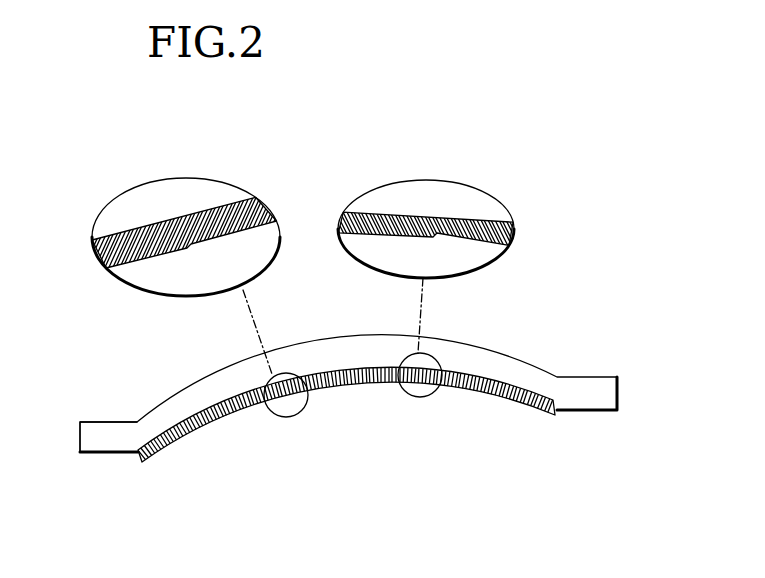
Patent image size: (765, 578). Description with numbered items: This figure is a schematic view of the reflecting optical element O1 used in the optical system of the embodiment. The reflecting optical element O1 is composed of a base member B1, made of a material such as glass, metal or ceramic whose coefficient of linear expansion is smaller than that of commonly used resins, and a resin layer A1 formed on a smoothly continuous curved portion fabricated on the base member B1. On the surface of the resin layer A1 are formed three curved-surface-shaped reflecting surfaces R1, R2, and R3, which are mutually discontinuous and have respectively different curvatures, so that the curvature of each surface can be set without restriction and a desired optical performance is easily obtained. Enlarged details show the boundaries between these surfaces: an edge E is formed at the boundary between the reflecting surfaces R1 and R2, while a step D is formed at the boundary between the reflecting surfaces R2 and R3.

The resin layer A1 is at (187, 418).
The base member B1 is at (516, 367).
The reflecting optical element O1 is at (102, 445).
The reflecting surface R1 is at (287, 418).
The reflecting surface R2 is at (413, 397).
The reflecting surface R3 is at (547, 434).
The step D is at (433, 269).
The edge E is at (191, 279).